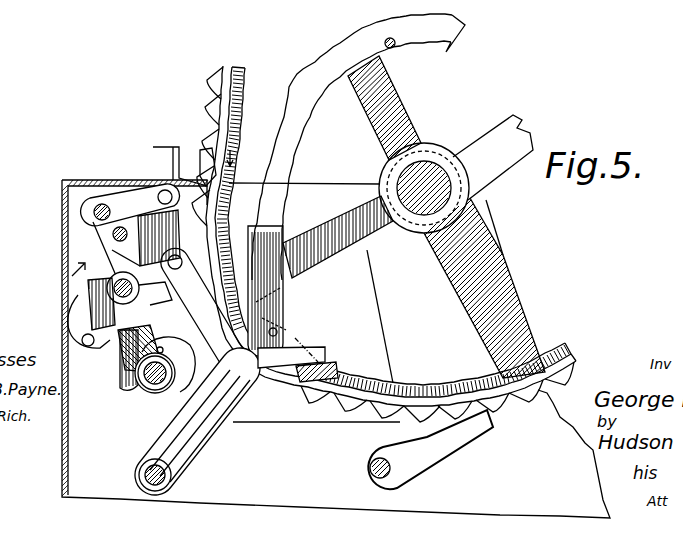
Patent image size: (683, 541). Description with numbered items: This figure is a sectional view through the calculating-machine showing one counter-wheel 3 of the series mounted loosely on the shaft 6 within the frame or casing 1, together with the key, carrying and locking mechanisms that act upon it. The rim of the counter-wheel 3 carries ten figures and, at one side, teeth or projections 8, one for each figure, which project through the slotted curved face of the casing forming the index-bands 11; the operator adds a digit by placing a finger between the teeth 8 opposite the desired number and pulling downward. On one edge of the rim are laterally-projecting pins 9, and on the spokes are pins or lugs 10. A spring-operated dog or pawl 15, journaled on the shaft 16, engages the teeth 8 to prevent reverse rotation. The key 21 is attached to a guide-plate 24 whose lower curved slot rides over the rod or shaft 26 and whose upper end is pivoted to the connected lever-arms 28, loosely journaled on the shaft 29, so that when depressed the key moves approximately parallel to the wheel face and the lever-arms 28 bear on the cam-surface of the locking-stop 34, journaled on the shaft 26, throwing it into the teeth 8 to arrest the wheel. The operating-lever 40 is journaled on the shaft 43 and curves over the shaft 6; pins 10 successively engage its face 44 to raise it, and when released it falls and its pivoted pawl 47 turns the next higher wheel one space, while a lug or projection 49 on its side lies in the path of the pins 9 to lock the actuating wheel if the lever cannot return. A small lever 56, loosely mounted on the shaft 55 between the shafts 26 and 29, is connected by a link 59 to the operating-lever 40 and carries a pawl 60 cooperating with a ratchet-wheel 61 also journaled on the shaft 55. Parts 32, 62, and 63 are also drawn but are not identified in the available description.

The frame or casing 1 is at (488, 221).
The counter-wheel 3 is at (218, 117).
The shaft 6 is at (424, 188).
The teeth or projections 8 is at (206, 104).
The pins 9 is at (278, 333).
The pins or lugs 10 is at (393, 48).
The index-bands 11 is at (207, 157).
The dogs or pawls 15 is at (434, 465).
The shaft 16 is at (372, 476).
The key 21 is at (176, 148).
The guide-plate 24 is at (140, 357).
The rod or shaft 26 is at (155, 380).
The lever-arms 28 is at (130, 205).
The shaft 29 is at (94, 210).
The pin 32 is at (112, 232).
The locking-stop 34 is at (163, 352).
The operating-lever 40 is at (280, 289).
The shaft 43 is at (174, 479).
The face 44 is at (453, 43).
The pivoted pawl 47 is at (305, 374).
The lug or projection 49 is at (300, 345).
The shaft 55 is at (108, 287).
The small lever 56 is at (155, 293).
The links 59 is at (247, 308).
The pawls 60 is at (135, 347).
The ratchet-wheels 61 is at (108, 262).
The spring 62 is at (88, 312).
The hook 63 is at (100, 330).